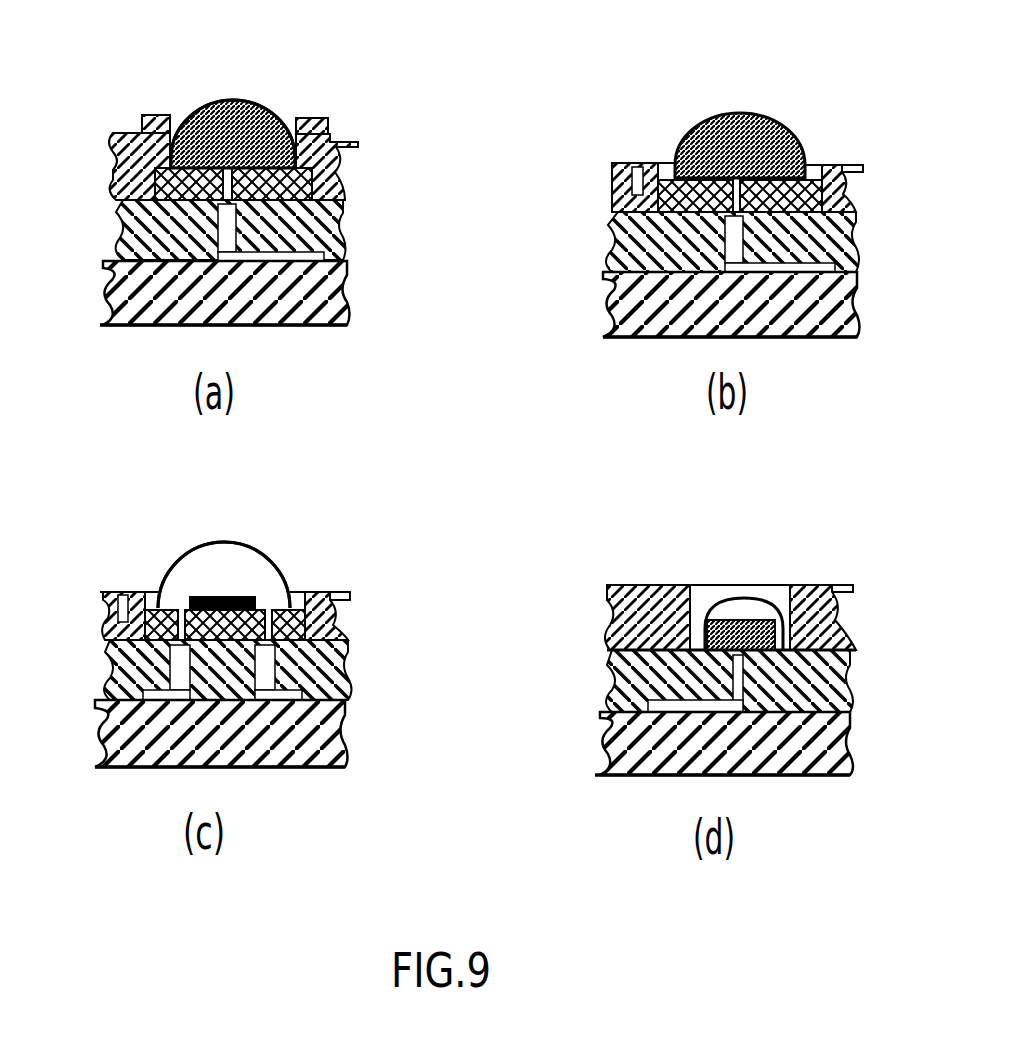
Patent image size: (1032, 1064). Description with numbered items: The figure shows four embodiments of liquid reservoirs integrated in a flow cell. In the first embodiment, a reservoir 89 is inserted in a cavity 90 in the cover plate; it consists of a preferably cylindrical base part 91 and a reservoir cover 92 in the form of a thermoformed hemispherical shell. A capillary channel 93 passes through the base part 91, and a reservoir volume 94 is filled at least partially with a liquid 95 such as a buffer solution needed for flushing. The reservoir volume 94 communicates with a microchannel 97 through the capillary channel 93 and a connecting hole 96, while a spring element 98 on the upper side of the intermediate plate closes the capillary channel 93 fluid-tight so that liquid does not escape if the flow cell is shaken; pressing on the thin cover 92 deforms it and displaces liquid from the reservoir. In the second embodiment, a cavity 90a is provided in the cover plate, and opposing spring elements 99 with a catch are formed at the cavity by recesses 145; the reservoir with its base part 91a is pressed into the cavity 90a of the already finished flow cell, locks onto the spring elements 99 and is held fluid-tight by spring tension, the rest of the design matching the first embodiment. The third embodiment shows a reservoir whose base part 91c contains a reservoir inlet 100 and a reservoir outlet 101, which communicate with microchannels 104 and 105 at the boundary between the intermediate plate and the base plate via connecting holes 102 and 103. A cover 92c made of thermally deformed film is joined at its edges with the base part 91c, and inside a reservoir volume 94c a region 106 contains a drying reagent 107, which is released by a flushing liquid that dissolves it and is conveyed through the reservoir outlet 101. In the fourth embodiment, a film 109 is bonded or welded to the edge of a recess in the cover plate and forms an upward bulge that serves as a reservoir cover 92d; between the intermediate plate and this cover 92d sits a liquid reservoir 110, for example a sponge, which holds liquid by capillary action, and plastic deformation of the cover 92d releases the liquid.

The reservoir 89 is at (235, 195).
The cavity 90 is at (177, 122).
The base part 91 is at (122, 229).
The reservoir cover 92 is at (280, 120).
The capillary channel 93 is at (348, 220).
The reservoir volume 94 is at (214, 100).
The liquid 95 is at (113, 158).
The connecting hole 96 is at (133, 284).
The microchannel 97 is at (347, 296).
The spring element 98 is at (238, 215).
The spring elements 99 is at (652, 163).
The cavity 90a is at (818, 165).
The recesses 145 is at (625, 176).
The substrate layer 91a is at (622, 238).
The cover 92c is at (268, 560).
The reservoir volume 94c is at (197, 578).
The region 106 is at (215, 590).
The drying reagent 107 is at (236, 598).
The base part 91c is at (333, 623).
The reservoir inlet 100 is at (175, 668).
The reservoir outlet 101 is at (290, 673).
The connecting hole 102 is at (160, 697).
The connecting hole 103 is at (343, 732).
The microchannel 104 is at (150, 707).
The microchannel 105 is at (320, 767).
The reservoir cover 92d is at (757, 598).
The film 109 is at (620, 663).
The liquid reservoir 110 is at (835, 690).